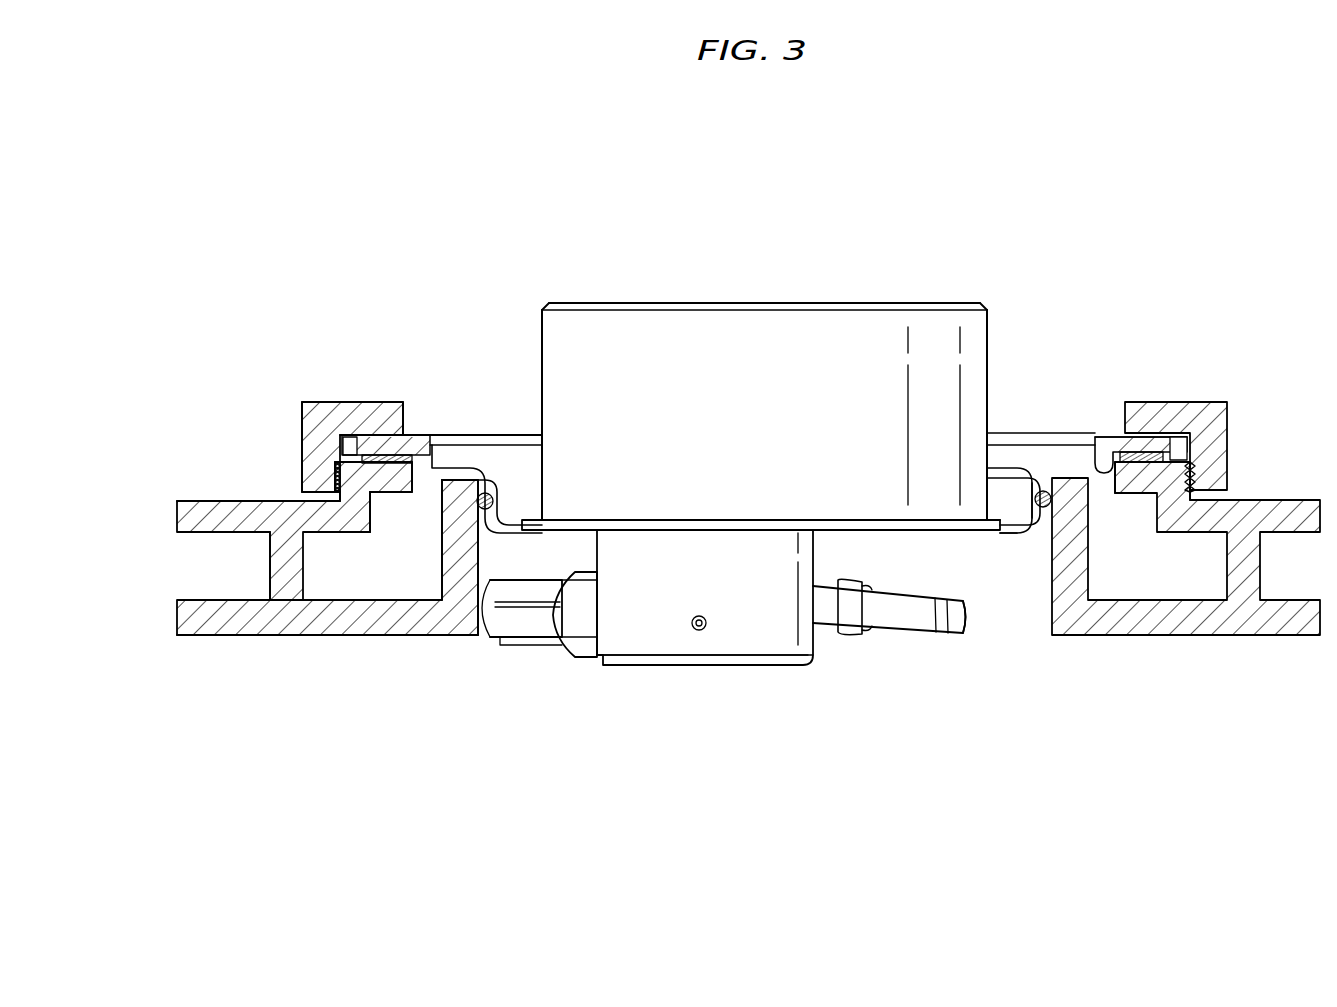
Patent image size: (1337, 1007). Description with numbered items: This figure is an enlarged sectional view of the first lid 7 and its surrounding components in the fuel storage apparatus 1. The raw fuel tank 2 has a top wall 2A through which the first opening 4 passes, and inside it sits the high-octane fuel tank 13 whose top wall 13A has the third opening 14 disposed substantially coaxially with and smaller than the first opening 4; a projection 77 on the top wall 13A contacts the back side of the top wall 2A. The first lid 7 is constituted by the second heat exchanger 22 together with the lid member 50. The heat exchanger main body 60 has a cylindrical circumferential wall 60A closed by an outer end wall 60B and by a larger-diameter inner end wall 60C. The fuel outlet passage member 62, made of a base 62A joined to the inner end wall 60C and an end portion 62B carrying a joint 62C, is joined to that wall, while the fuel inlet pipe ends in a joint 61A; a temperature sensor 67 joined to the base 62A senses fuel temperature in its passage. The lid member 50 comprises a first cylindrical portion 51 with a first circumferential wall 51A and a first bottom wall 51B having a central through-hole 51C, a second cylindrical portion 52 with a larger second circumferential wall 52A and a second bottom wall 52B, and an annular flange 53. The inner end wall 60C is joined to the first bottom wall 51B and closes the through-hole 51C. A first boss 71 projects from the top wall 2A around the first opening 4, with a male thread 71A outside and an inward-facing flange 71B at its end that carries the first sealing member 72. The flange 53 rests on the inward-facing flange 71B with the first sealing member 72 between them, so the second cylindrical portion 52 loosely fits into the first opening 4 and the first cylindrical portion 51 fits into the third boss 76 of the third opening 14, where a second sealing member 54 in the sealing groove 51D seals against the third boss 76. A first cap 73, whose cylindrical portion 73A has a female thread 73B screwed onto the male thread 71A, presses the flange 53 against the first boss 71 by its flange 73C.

The fuel storage apparatus 1 is at (360, 184).
The raw fuel tank 2 is at (190, 498).
The top wall 2A is at (220, 502).
The first opening 4 is at (408, 497).
The first lid 7 is at (822, 243).
The high-octane fuel tank 13 is at (248, 637).
The top wall 13A is at (303, 636).
The third opening 14 is at (490, 645).
The second heat exchanger 22 is at (843, 301).
The lid member 50 is at (1098, 436).
The first cylindrical portion 51 is at (1035, 540).
The first circumferential wall 51A is at (1036, 538).
The first bottom wall 51B is at (1010, 535).
The through-hole 51C is at (988, 530).
The sealing groove 51D is at (1036, 489).
The second cylindrical portion 52 is at (1103, 488).
The second circumferential wall 52A is at (1122, 482).
The second bottom wall 52B is at (1097, 460).
The flange 53 is at (1162, 402).
The second sealing member 54 is at (495, 501).
The main body 60 is at (730, 301).
The circumferential wall 60A is at (615, 306).
The outer end wall 60B is at (887, 303).
The inner end wall 60C is at (748, 520).
The joint 61A is at (957, 634).
The fuel outlet passage member 62 is at (740, 668).
The base 62A is at (665, 640).
The end portion 62B is at (845, 634).
The joint 62C is at (905, 622).
The temperature sensor 67 is at (548, 632).
The first boss 71 is at (352, 528).
The male thread 71A is at (332, 490).
The inward-facing flange 71B is at (392, 488).
The first sealing member 72 is at (400, 437).
The first cap 73 is at (323, 398).
The cylindrical portion 73A is at (303, 418).
The female thread 73B is at (330, 474).
The flange 73C is at (360, 402).
The third boss 76 is at (445, 565).
The projection 77 is at (290, 563).